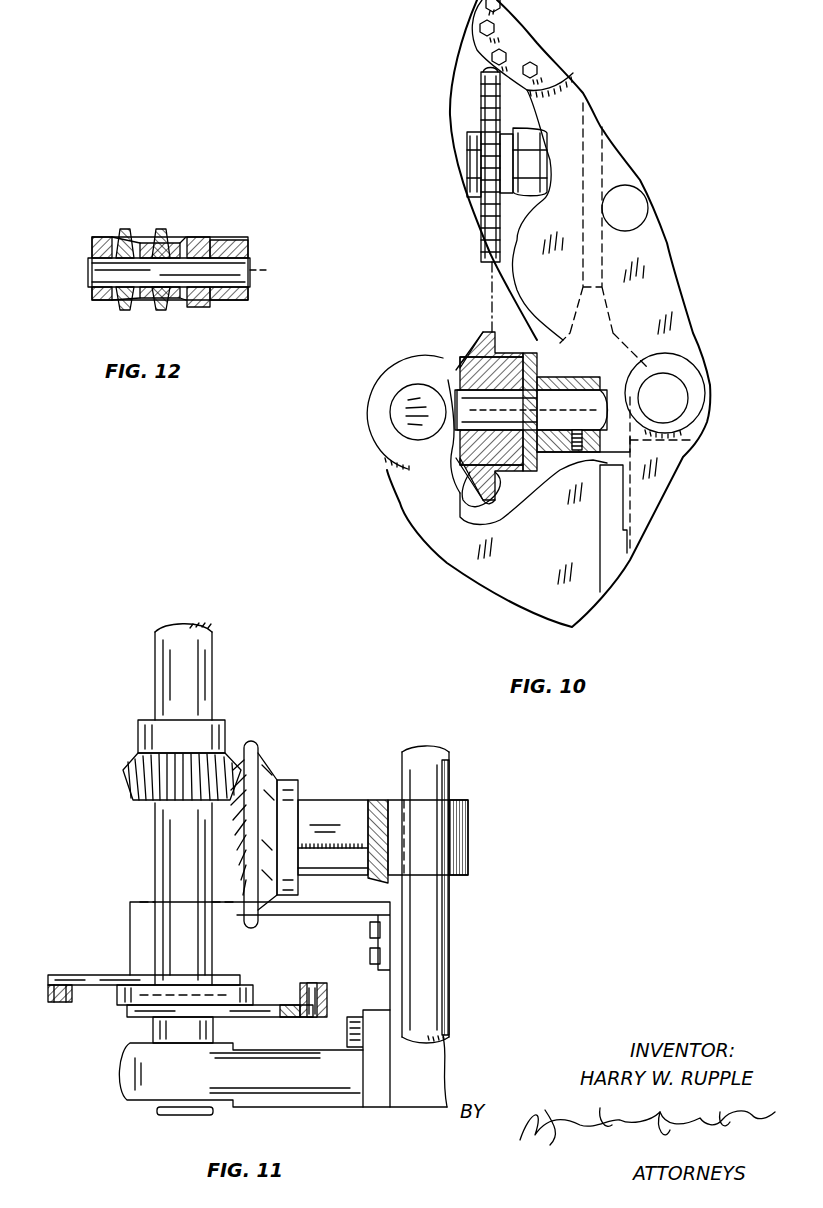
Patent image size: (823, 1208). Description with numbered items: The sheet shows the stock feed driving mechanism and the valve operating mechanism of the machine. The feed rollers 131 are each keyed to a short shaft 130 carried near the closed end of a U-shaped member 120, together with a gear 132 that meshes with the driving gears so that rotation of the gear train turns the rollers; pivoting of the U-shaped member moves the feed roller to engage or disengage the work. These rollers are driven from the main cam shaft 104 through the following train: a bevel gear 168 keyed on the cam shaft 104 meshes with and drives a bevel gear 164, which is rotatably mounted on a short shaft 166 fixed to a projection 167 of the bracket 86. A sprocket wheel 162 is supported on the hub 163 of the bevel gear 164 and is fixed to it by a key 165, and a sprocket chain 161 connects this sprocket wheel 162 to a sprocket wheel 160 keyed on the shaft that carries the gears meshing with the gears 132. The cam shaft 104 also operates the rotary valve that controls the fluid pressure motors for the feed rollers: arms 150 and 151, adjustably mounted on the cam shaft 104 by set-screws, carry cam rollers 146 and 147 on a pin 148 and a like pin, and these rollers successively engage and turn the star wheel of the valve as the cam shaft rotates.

In FIG. 10, the bracket 86 is at (660, 280).
In FIG. 10, the main cam shaft 104 is at (395, 400).
In FIG. 11, the main cam shaft 104 is at (205, 663).
In FIG. 12, the U-shaped member 120 is at (248, 246).
In FIG. 12, the short shaft 130 is at (95, 270).
In FIG. 12, the feed roller 131 is at (120, 232).
In FIG. 12, the gear 132 is at (200, 237).
In FIG. 11, the cam roller 146 is at (325, 998).
In FIG. 11, the cam roller 147 is at (57, 1002).
In FIG. 11, the pin 148 is at (310, 1019).
In FIG. 11, the arm 150 is at (257, 1007).
In FIG. 11, the arm 151 is at (100, 955).
In FIG. 10, the sprocket wheel 160 is at (478, 101).
In FIG. 10, the sprocket chain 161 is at (485, 277).
In FIG. 10, the sprocket wheel 162 is at (497, 503).
In FIG. 11, the sprocket wheel 162 is at (263, 783).
In FIG. 10, the hub 163 is at (528, 465).
In FIG. 10, the bevel gear 164 is at (472, 357).
In FIG. 11, the bevel gear 164 is at (235, 885).
In FIG. 10, the key 165 is at (465, 375).
In FIG. 10, the short shaft 166 is at (430, 467).
In FIG. 10, the projection 167 is at (573, 382).
In FIG. 11, the bevel gear 168 is at (130, 762).